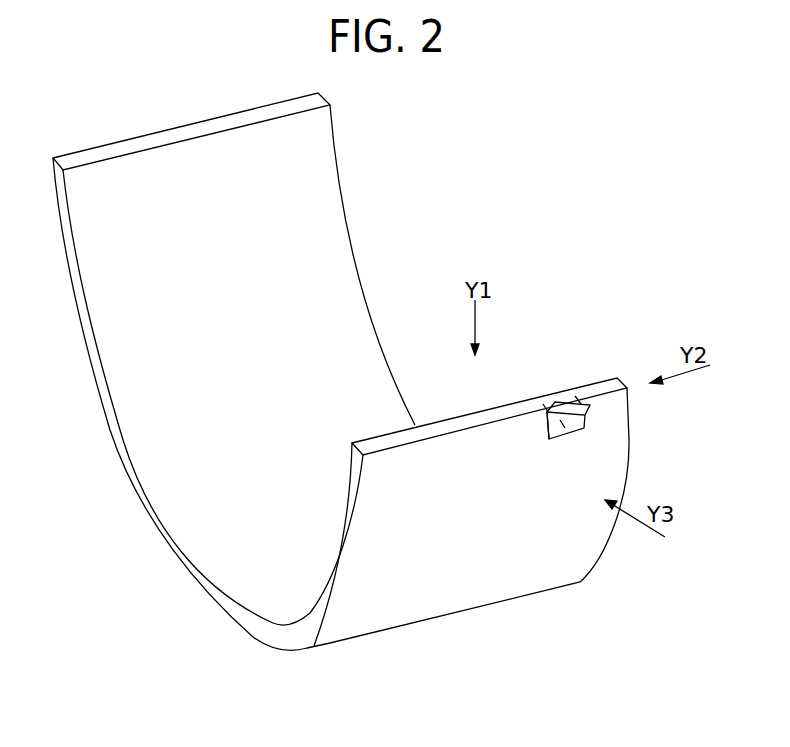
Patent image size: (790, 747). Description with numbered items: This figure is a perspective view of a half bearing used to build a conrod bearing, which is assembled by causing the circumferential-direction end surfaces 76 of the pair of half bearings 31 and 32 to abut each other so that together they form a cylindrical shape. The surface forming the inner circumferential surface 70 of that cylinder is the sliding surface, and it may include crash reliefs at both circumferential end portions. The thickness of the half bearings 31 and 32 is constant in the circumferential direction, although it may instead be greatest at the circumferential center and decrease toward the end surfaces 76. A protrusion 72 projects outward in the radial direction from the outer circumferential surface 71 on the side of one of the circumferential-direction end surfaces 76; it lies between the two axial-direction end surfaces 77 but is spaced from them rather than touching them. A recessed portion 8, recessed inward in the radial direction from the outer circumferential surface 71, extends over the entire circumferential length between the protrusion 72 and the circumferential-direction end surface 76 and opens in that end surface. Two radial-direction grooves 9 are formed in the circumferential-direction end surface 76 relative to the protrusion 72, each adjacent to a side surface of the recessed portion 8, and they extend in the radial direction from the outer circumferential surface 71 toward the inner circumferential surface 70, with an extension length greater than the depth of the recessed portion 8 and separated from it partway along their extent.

The half bearing 31 is at (385, 371).
The half bearing 32 is at (385, 371).
The inner circumferential surface 70 is at (330, 317).
The outer circumferential surface 71 is at (553, 545).
The protrusion 72 is at (565, 428).
The circumferential-direction end surface 76 is at (102, 152).
The axial-direction end surface 77 is at (137, 477).
The recessed portion 8 is at (555, 407).
The radial-direction groove 9 is at (545, 397).